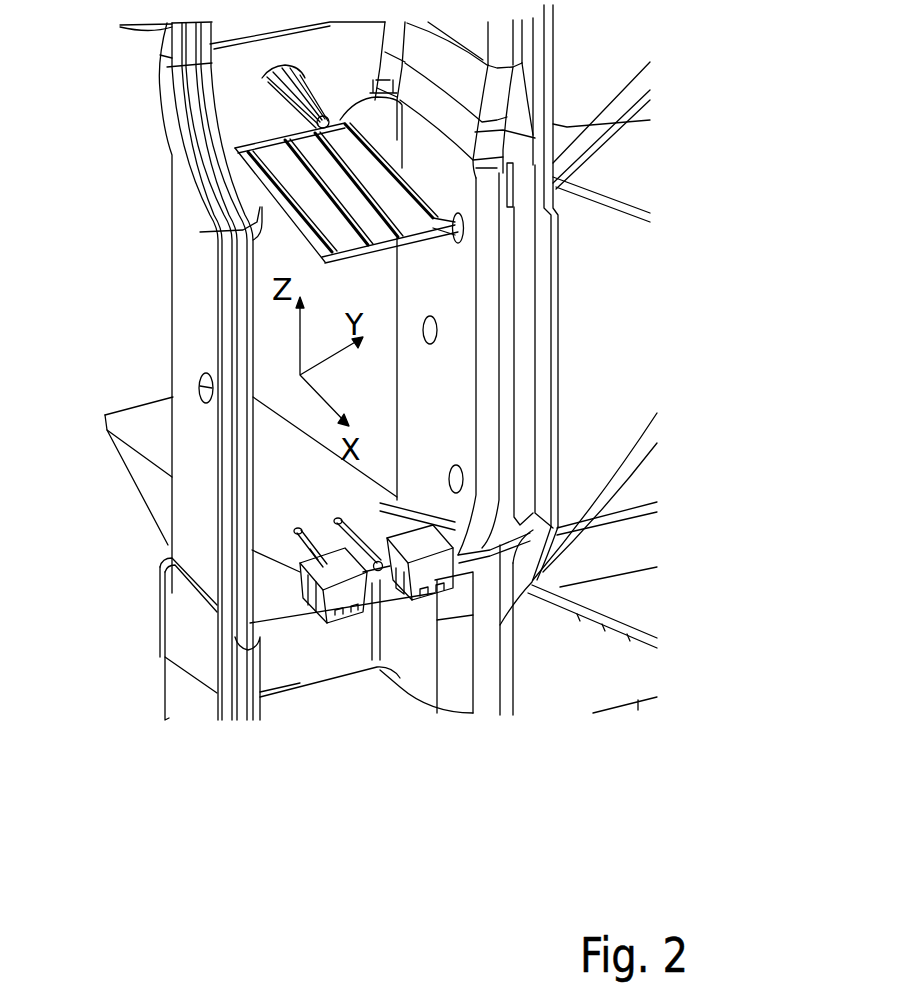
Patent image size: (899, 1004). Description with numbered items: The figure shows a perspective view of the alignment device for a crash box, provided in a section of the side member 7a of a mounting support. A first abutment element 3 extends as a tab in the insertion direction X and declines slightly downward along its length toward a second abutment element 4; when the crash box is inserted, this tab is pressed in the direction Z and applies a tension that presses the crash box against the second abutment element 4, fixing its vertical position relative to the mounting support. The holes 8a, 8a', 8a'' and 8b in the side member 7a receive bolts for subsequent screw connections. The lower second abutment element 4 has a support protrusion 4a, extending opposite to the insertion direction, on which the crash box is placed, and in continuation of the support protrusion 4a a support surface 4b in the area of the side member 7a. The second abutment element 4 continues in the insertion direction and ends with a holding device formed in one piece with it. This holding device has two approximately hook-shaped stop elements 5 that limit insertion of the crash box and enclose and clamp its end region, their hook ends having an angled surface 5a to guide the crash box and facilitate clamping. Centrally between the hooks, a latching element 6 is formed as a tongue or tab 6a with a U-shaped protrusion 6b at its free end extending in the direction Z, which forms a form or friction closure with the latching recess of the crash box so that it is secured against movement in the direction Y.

The first abutment element 3 is at (432, 218).
The second abutment element 4 is at (335, 648).
The support protrusion 4a is at (148, 423).
The support surface 4b is at (263, 500).
The stop elements 5 is at (432, 548).
The angled surface 5a is at (302, 567).
The latching element 6 is at (328, 510).
The tongue or tab 6a is at (323, 530).
The U-shaped protrusion 6b is at (385, 570).
The side member 7a is at (222, 748).
The hole 8a is at (545, 321).
The hole 8a' is at (596, 243).
The hole 8a'' is at (600, 443).
The hole 8b is at (203, 380).